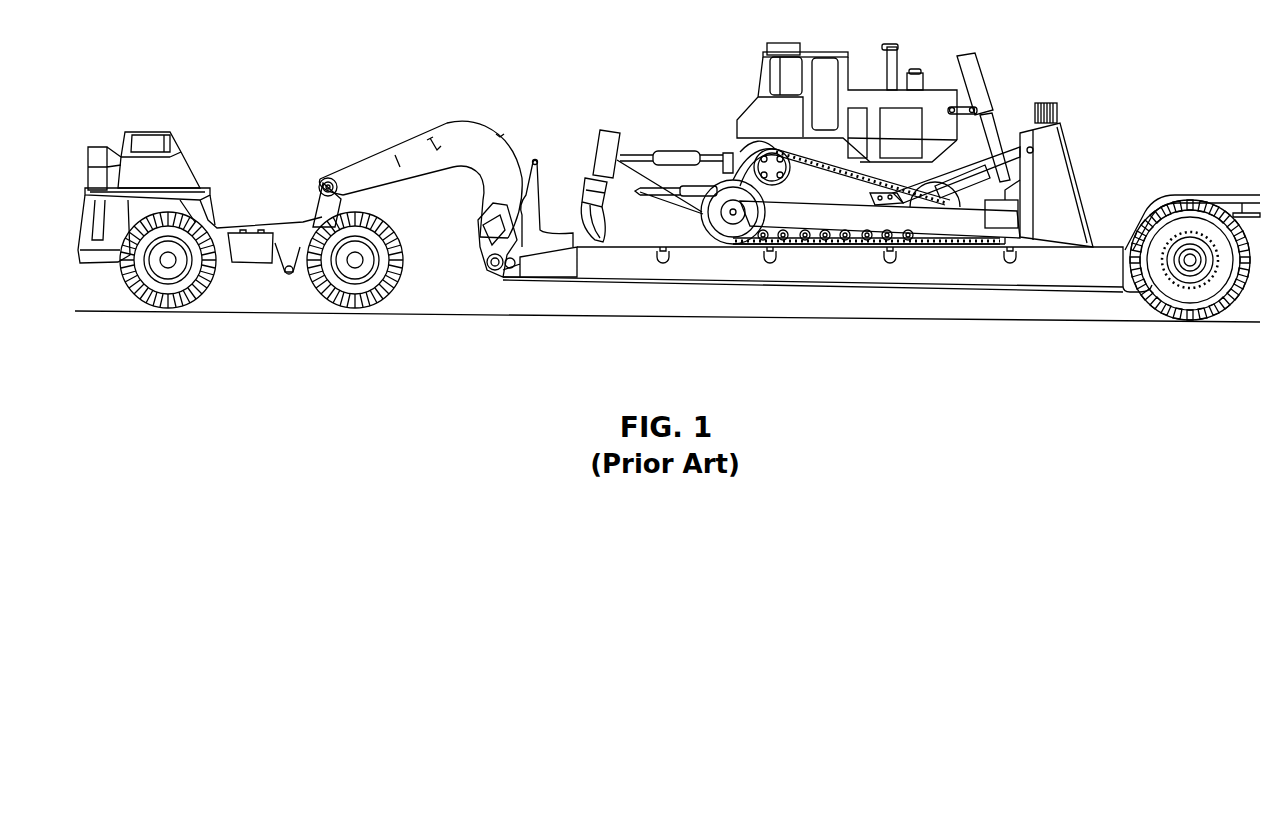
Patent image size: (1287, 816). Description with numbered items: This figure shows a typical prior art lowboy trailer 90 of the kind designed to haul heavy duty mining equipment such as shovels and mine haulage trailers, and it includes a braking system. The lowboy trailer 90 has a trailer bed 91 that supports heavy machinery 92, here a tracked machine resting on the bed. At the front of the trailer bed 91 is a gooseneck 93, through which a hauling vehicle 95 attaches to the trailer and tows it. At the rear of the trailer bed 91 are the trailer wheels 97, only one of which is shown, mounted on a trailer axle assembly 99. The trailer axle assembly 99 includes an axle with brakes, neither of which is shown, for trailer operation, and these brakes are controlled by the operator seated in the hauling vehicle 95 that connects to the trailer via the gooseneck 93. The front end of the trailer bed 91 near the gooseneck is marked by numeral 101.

The lowboy trailer 90 is at (1104, 160).
The trailer bed 91 is at (697, 265).
The heavy machinery 92 is at (988, 70).
The gooseneck 93 is at (509, 122).
The hauling vehicle 95 is at (207, 142).
The trailer wheels 97 is at (1193, 345).
The trailer axle assembly 99 is at (1187, 262).
The deck front end 101 is at (545, 285).